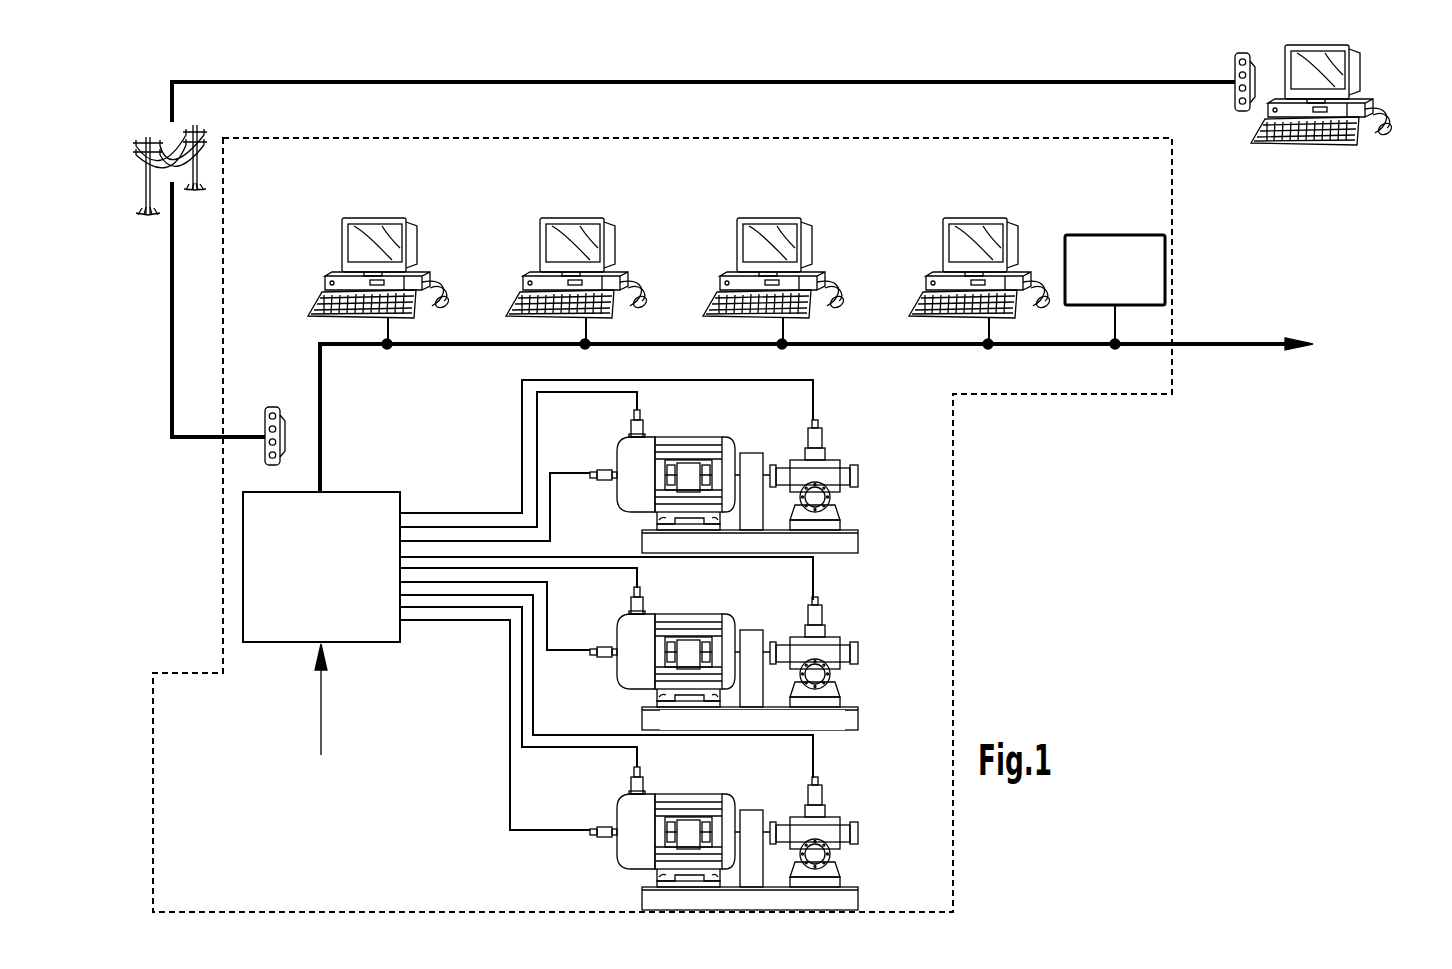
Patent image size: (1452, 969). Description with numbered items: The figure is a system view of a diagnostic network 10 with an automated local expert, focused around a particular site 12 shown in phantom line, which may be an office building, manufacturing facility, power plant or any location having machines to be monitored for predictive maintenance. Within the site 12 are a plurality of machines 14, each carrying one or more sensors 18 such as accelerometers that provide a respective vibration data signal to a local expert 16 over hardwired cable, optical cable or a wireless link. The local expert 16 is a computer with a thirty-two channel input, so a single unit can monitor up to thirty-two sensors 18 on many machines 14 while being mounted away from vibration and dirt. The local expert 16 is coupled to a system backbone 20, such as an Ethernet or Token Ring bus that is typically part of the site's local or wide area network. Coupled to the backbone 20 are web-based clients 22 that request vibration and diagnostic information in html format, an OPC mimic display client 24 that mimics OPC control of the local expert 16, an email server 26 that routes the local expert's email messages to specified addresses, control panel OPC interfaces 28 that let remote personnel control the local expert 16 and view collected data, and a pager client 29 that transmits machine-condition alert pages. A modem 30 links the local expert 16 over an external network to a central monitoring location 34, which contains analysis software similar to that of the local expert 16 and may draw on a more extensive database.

The diagnostic network 10 is at (172, 556).
The site 12 is at (197, 673).
The machines 14 is at (600, 464).
The local expert 16 is at (243, 572).
The sensors 18 is at (631, 427).
The system backbone 20 is at (320, 400).
The web-based clients 22 is at (342, 252).
The OPC mimic display client 24 is at (540, 252).
The email server 26 is at (737, 252).
The control panel OPC interfaces 28 is at (943, 252).
The pager client 29 is at (1094, 235).
The modem 30 is at (275, 407).
The central monitoring location 34 is at (1360, 70).